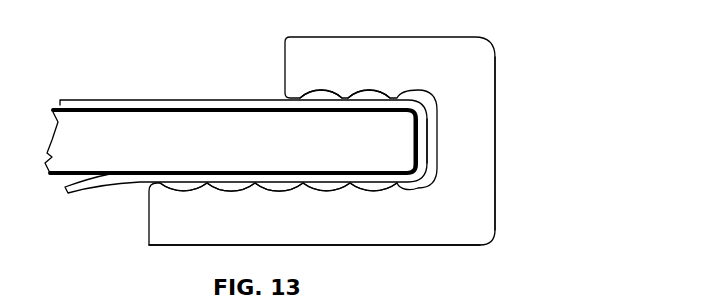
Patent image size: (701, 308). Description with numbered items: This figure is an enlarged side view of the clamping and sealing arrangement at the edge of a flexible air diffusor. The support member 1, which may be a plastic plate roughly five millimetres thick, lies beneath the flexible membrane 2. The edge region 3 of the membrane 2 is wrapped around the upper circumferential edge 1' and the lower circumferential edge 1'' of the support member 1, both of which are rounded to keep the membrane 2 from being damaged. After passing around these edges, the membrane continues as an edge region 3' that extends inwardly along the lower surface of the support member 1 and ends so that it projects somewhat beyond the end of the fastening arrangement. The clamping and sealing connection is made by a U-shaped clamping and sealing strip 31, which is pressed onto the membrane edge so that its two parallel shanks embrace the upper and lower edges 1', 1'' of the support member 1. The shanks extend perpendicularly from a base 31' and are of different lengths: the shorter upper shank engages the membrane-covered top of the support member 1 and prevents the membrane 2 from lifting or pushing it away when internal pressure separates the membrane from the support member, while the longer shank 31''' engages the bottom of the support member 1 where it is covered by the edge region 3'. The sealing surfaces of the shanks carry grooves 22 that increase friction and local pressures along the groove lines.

The support member 1 is at (229, 109).
The upper circumferential edge 1' is at (394, 125).
The lower circumferential edge 1'' is at (386, 156).
The flexible membrane 2 is at (207, 103).
The edge region 3 is at (243, 146).
The edge region 3' is at (444, 171).
The grooves 22 is at (352, 97).
The clamping and sealing strip 31 is at (356, 122).
The base 31' is at (520, 147).
The shank 31''' is at (314, 261).